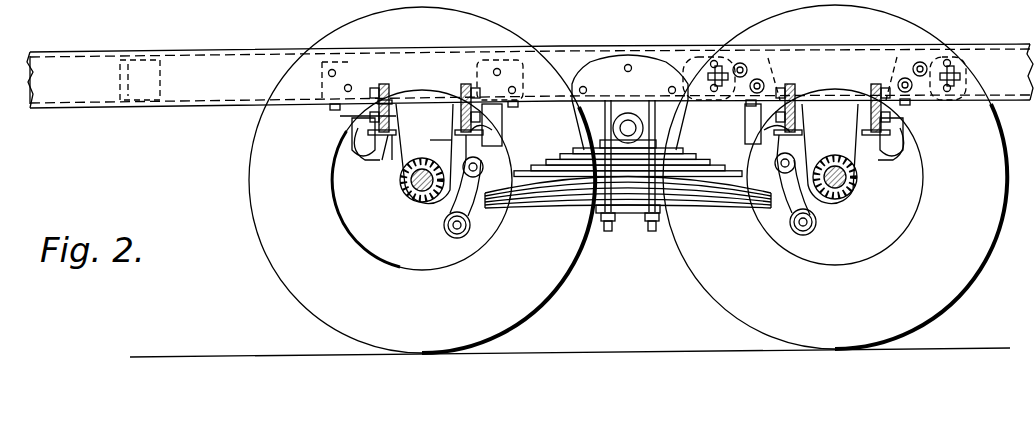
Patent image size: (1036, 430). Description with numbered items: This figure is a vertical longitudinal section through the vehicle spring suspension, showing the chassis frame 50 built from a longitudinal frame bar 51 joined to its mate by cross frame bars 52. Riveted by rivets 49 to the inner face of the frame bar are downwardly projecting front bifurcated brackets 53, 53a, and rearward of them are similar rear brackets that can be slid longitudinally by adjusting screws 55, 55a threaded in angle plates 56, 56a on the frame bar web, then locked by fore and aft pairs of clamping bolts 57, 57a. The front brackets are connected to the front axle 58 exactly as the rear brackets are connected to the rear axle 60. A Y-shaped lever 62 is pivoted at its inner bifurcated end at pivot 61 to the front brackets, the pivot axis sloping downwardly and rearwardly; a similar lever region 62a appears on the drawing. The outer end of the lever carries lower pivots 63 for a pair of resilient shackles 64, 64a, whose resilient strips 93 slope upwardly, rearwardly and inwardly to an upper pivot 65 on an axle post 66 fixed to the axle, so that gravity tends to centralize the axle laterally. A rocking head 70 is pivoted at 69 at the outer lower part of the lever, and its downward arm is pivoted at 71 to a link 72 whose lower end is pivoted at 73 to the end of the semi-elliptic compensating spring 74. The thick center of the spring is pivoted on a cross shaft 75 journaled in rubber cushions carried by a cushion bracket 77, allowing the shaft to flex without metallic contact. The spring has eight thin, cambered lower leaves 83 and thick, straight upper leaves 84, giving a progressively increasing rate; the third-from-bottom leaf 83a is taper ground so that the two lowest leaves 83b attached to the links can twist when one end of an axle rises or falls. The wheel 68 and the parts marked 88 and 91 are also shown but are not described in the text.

The rivets 49 is at (330, 86).
The rectangular frame 50 is at (190, 47).
The longitudinal frame bar 51 is at (28, 82).
The cross frame bars 52 is at (120, 80).
The front bifurcated bracket 53 is at (360, 124).
The front bifurcated bracket 53a is at (502, 116).
The adjusting screw 55 is at (695, 58).
The adjusting screw 55a is at (972, 80).
The angle plate 56 is at (720, 70).
The angle plate 56a is at (951, 70).
The clamping bolts 57 is at (760, 80).
The clamping bolts 57a is at (905, 79).
The front axle 58 is at (432, 202).
The rear axle 60 is at (860, 182).
The pivot 61 is at (352, 140).
The Y-shaped lever 62 is at (392, 160).
The pedestal jaw 62a is at (456, 138).
The lower pivots 63 is at (352, 120).
The resilient shackle 64 is at (384, 80).
The resilient shackle 64a is at (469, 79).
The upper pivot 65 is at (358, 86).
The axle post 66 is at (443, 104).
The wheel 68 is at (292, 290).
The pivot 69 is at (375, 142).
The rocking head 70 is at (447, 150).
The pivot 71 is at (505, 147).
The link 72 is at (570, 178).
The pivot 73 is at (446, 235).
The semi-elliptic compensating spring 74 is at (578, 150).
The cross shaft 75 is at (629, 116).
The cushion bracket 77 is at (674, 122).
The lower leaves 83 is at (572, 206).
The lowermost spring leaf 83a is at (516, 215).
The lower thin leaves 83b is at (700, 206).
The upper leaves 84 is at (676, 160).
The nut 88 is at (394, 97).
The nut 91 is at (394, 118).
The resilient strips 93 is at (392, 88).